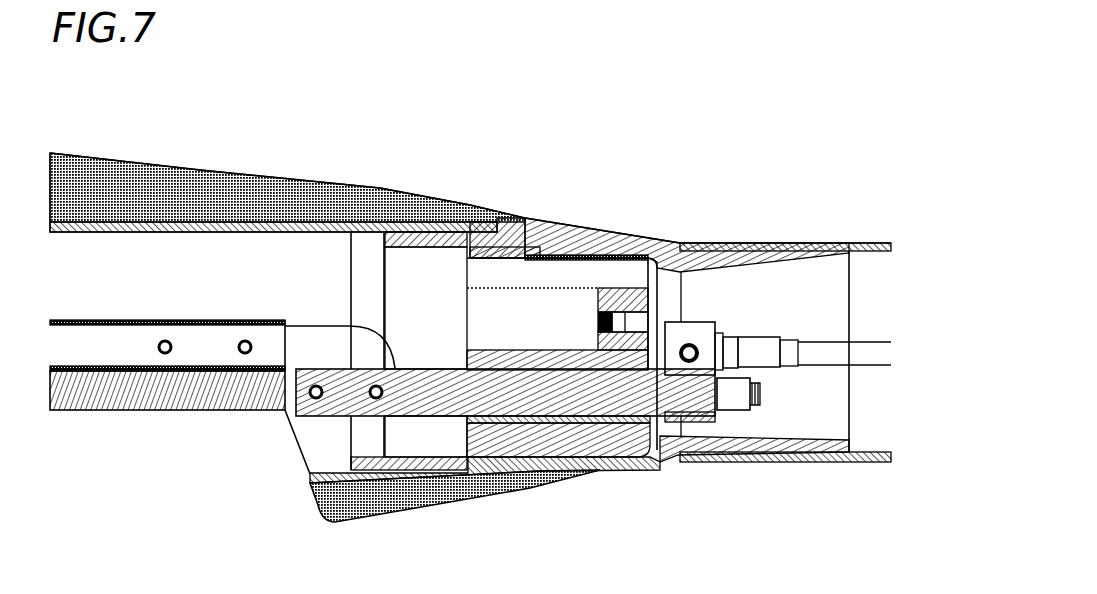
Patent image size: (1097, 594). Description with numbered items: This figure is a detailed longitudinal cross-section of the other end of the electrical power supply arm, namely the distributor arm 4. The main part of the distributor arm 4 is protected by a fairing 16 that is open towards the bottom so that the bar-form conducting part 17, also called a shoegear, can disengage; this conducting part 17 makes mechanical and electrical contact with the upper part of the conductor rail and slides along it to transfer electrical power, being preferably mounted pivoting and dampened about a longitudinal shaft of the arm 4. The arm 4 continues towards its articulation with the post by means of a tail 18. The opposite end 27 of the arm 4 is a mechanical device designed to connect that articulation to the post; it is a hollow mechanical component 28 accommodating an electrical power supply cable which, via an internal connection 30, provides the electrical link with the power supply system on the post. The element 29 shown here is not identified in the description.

The distributor arm 4 is at (346, 124).
The fairing 16 is at (263, 175).
The bar-form conducting part 17 is at (106, 392).
The tail 18 is at (787, 222).
The opposite end 27 is at (190, 143).
The hollow mechanical component 28 is at (872, 241).
The conductor rod 29 is at (812, 354).
The internal connection 30 is at (577, 476).